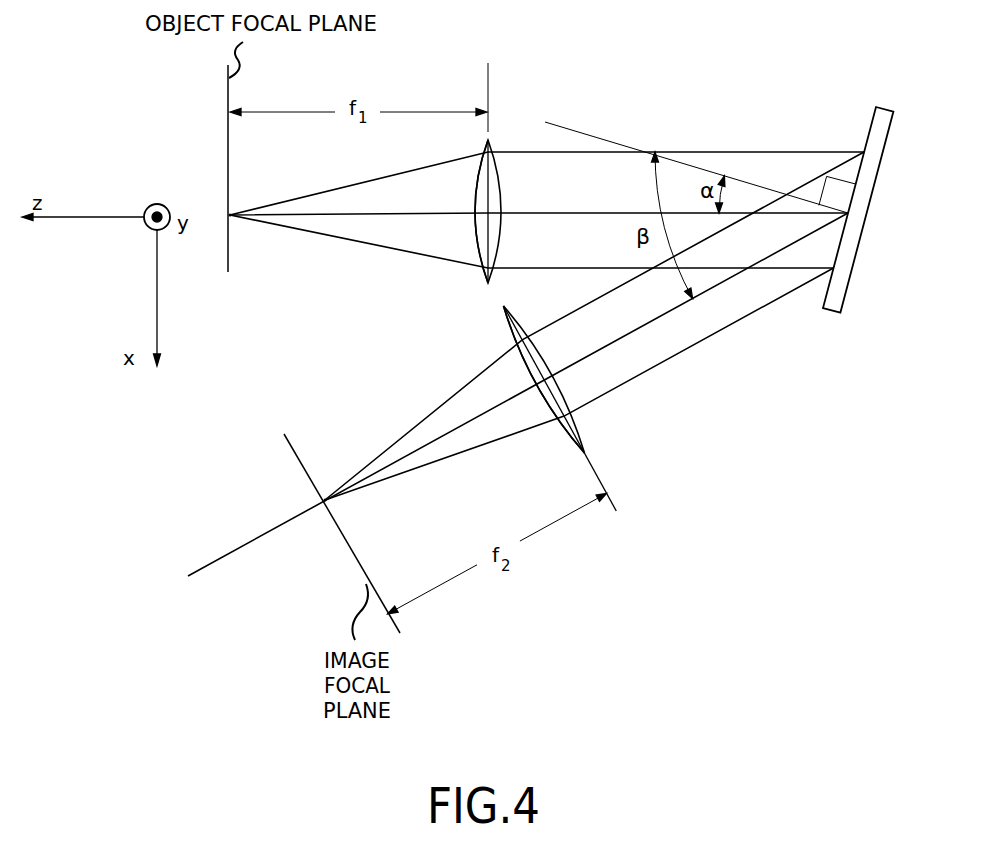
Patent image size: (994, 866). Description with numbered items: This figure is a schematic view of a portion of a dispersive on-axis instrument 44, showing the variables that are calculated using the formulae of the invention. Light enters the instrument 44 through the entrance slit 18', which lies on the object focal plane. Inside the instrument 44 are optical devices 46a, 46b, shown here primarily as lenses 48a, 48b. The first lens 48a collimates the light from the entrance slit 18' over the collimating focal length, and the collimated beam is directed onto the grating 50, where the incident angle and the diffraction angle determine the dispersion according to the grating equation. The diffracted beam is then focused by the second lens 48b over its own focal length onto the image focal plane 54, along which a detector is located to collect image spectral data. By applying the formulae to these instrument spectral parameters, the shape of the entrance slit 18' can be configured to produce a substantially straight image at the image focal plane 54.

The entrance slit 18' is at (208, 187).
The instrument 44 is at (598, 107).
The optical device 46a is at (495, 147).
The optical device 46b is at (586, 447).
The lens 48a is at (478, 250).
The lens 48b is at (502, 318).
The grating 50 is at (870, 126).
The image focal plane 54 is at (318, 491).